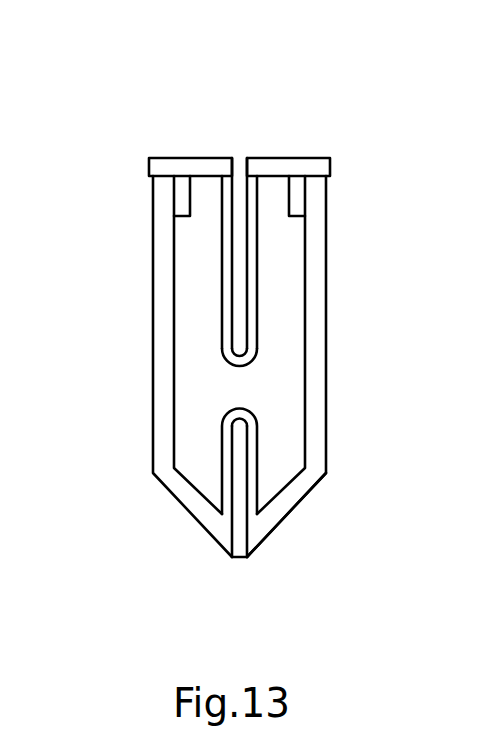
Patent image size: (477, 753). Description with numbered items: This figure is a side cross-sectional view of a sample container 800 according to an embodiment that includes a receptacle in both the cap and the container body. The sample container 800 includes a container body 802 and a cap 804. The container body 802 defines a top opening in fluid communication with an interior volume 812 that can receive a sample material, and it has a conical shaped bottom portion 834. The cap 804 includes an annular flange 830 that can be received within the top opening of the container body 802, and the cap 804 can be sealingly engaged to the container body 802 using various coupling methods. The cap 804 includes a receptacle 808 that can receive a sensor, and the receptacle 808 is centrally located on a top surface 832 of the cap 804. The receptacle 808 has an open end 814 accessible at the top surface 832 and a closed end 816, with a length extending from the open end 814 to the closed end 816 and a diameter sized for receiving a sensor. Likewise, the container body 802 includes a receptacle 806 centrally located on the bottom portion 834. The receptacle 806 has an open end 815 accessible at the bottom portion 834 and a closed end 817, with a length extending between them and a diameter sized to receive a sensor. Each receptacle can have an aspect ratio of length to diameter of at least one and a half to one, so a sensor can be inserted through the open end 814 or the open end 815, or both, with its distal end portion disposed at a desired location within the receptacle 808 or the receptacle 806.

The sample container 800 is at (240, 332).
The container body 802 is at (139, 406).
The cap 804 is at (161, 145).
The receptacle 806 is at (237, 496).
The receptacle 808 is at (238, 297).
The interior volume 812 is at (182, 241).
The open end 814 is at (232, 158).
The open end 815 is at (232, 558).
The closed end 816 is at (227, 360).
The closed end 817 is at (222, 422).
The annular flange 830 is at (182, 195).
The top surface 832 is at (280, 158).
The bottom portion 834 is at (292, 512).